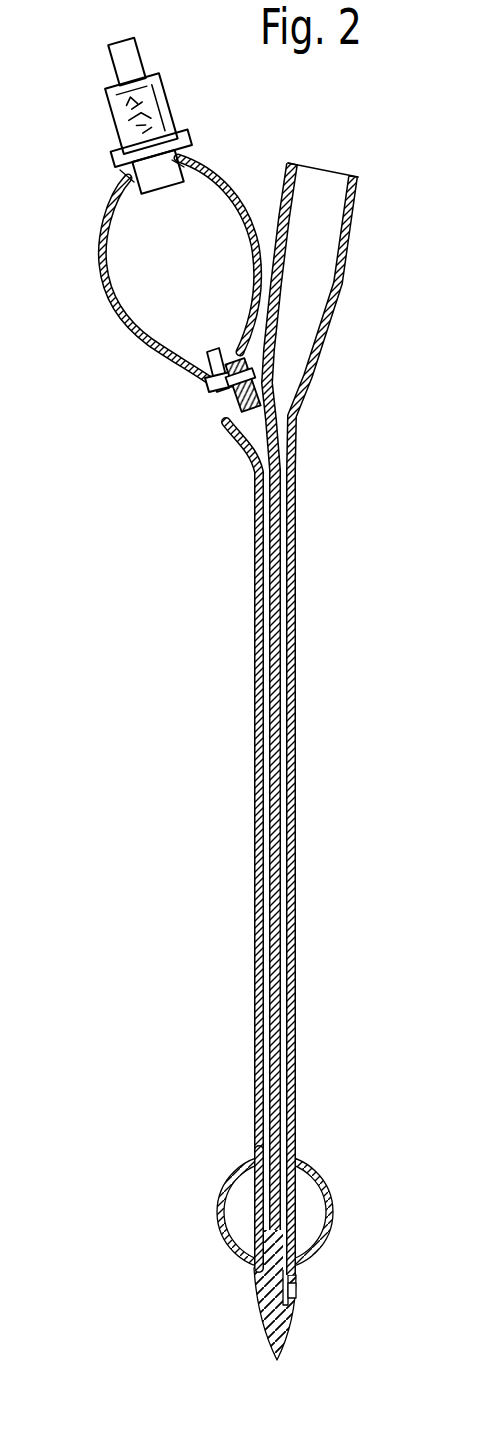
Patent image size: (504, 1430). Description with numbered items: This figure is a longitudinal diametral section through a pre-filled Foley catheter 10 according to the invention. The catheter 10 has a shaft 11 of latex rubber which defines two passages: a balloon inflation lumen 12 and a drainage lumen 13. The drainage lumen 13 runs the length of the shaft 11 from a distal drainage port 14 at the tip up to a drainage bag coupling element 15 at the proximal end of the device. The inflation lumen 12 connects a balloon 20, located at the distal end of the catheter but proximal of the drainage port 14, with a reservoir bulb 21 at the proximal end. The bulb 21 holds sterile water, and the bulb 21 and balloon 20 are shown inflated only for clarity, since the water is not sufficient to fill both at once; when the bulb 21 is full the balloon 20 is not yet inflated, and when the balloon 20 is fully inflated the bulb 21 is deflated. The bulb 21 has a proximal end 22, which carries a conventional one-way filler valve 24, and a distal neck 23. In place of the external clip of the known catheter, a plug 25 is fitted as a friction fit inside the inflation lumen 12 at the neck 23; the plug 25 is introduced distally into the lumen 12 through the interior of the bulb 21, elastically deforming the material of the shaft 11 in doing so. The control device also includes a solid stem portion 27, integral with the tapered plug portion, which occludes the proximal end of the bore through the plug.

The catheter 10 is at (224, 673).
The shaft 11 is at (255, 843).
The balloon inflation lumen 12 is at (260, 942).
The drainage lumen 13 is at (283, 953).
The distal drainage port 14 is at (297, 1290).
The drainage bag coupling element 15 is at (348, 268).
The balloon 20 is at (217, 1205).
The reservoir bulb 21 is at (100, 272).
The proximal end 22 is at (118, 176).
The distal neck 23 is at (208, 386).
The one-way filler valve 24 is at (112, 108).
The plug 25 is at (228, 416).
The solid stem portion 27 is at (211, 343).